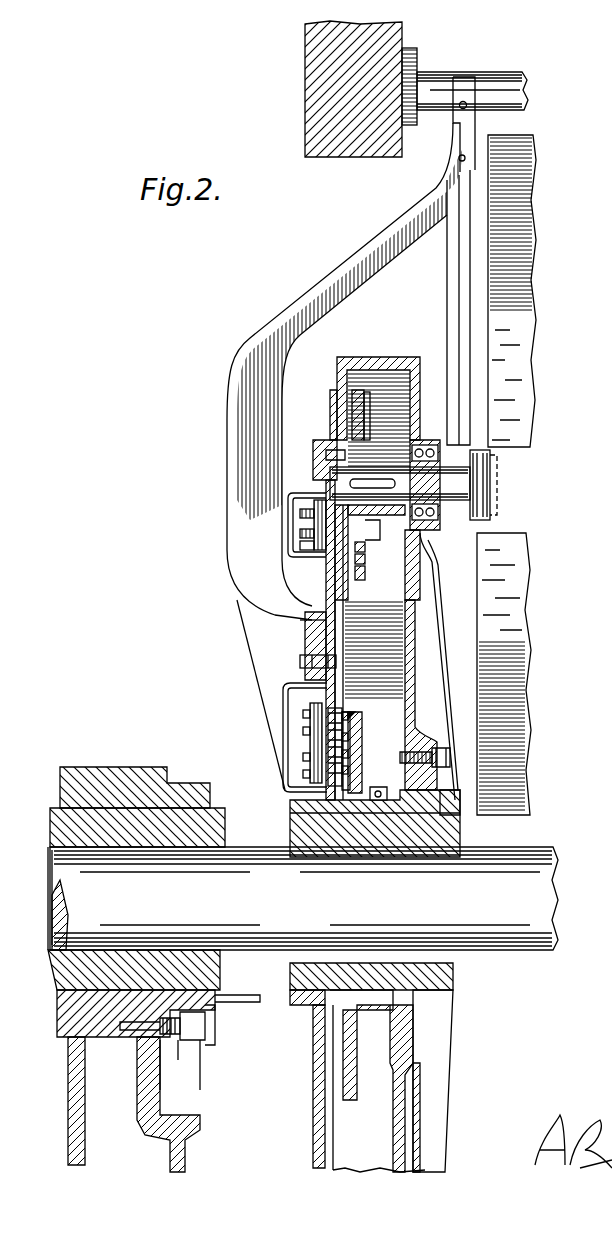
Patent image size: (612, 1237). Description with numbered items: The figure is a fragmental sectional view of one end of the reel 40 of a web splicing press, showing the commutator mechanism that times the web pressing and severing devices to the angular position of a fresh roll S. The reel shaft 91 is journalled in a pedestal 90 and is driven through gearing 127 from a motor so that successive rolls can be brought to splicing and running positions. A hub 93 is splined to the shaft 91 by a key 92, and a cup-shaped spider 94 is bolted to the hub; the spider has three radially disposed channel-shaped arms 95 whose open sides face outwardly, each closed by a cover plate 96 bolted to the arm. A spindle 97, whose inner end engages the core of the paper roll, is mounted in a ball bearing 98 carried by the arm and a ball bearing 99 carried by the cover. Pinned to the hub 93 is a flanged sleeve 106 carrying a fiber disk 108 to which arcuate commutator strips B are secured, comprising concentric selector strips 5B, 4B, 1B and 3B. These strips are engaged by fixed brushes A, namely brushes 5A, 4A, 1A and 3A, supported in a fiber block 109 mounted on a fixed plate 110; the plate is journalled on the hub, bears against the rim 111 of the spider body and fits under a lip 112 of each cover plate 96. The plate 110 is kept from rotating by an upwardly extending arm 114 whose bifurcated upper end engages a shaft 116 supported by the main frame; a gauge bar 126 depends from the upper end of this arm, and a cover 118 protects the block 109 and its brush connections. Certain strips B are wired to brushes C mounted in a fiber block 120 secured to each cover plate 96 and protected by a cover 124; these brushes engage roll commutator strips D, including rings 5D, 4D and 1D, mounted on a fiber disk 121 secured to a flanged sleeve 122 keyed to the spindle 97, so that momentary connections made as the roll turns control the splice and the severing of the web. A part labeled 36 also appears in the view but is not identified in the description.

The support block 36 is at (305, 80).
The shaft 116 is at (445, 72).
The gauge bar 126 is at (447, 285).
The fresh roll S is at (535, 328).
The arm 114 is at (228, 515).
The arm 95 is at (372, 360).
The spindle 97 is at (380, 470).
The commutator strips D is at (355, 388).
The fiber disk 121 is at (368, 395).
The cover plate 96 is at (330, 394).
The ball bearing 99 is at (314, 458).
The ball bearing 98 is at (430, 548).
The flanged sleeve 122 is at (380, 505).
The selector ring 4D is at (366, 548).
The selector ring 1D is at (366, 560).
The selector ring 5D is at (366, 575).
The lip 112 is at (327, 572).
The spider 94 is at (413, 628).
The cover 124 is at (290, 497).
The brushes C is at (298, 532).
The fiber block 120 is at (300, 548).
The fixed plate 110 is at (312, 647).
The rim 111 is at (300, 623).
The brushes A is at (335, 708).
The commutator strips B is at (346, 710).
The cover 118 is at (283, 720).
The fiber block 109 is at (305, 745).
The brush 3A is at (303, 712).
The brush 1A is at (303, 730).
The brush 4A is at (303, 757).
The brush 5A is at (303, 774).
The fiber disk 108 is at (362, 740).
The selector strip 3B is at (350, 714).
The selector strip 1B is at (362, 742).
The selector strip 4B is at (362, 756).
The selector strip 5B is at (362, 768).
The flanged sleeve 106 is at (330, 832).
The hub 93 is at (455, 820).
The pedestal 90 is at (108, 767).
The gearing 127 is at (56, 767).
The shaft 91 is at (540, 890).
The key 92 is at (485, 963).
The reel 40 is at (456, 1090).